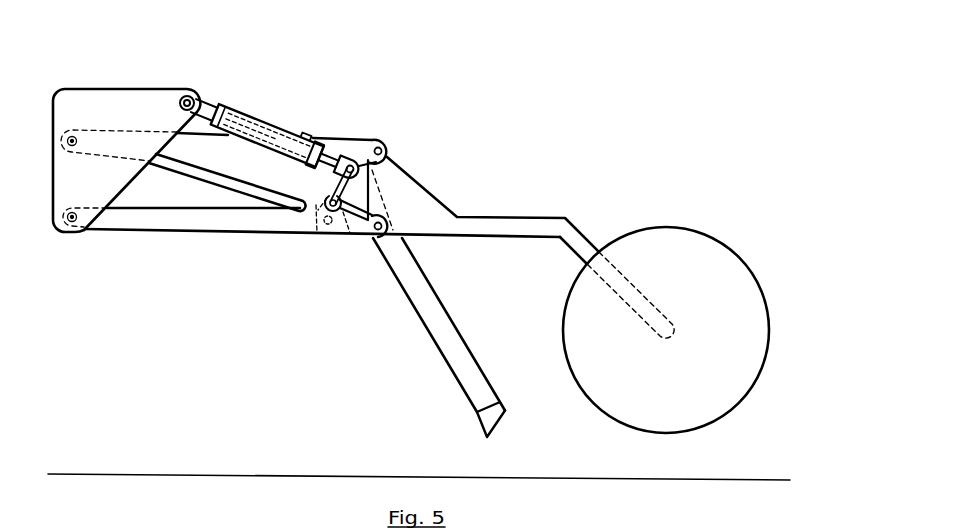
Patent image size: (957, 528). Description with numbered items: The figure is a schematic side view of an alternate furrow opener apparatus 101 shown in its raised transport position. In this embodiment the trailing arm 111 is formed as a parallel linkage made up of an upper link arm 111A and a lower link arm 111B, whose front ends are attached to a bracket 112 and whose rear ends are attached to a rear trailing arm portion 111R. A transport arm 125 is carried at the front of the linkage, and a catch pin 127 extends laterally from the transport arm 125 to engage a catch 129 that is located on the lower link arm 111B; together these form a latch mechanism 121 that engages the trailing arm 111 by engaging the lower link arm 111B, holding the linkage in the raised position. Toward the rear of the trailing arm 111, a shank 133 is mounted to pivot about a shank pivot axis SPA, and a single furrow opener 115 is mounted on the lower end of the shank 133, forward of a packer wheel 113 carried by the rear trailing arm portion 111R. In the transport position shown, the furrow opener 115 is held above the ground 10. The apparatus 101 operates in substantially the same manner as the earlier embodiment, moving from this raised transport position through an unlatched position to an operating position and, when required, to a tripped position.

The ground 10 is at (143, 473).
The apparatus 101 is at (512, 110).
The bracket 112 is at (135, 88).
The transport arm 125 is at (207, 165).
The trailing arm 111 is at (379, 217).
The upper link arm 111A is at (345, 139).
The lower link arm 111B is at (186, 232).
The rear trailing arm portion 111R is at (540, 215).
The shank pivot axis SPA is at (392, 233).
The packer wheel 113 is at (683, 228).
The latch mechanism 121 is at (285, 207).
The catch 129 is at (310, 234).
The catch pin 127 is at (350, 237).
The shank 133 is at (430, 332).
The furrow opener 115 is at (477, 422).